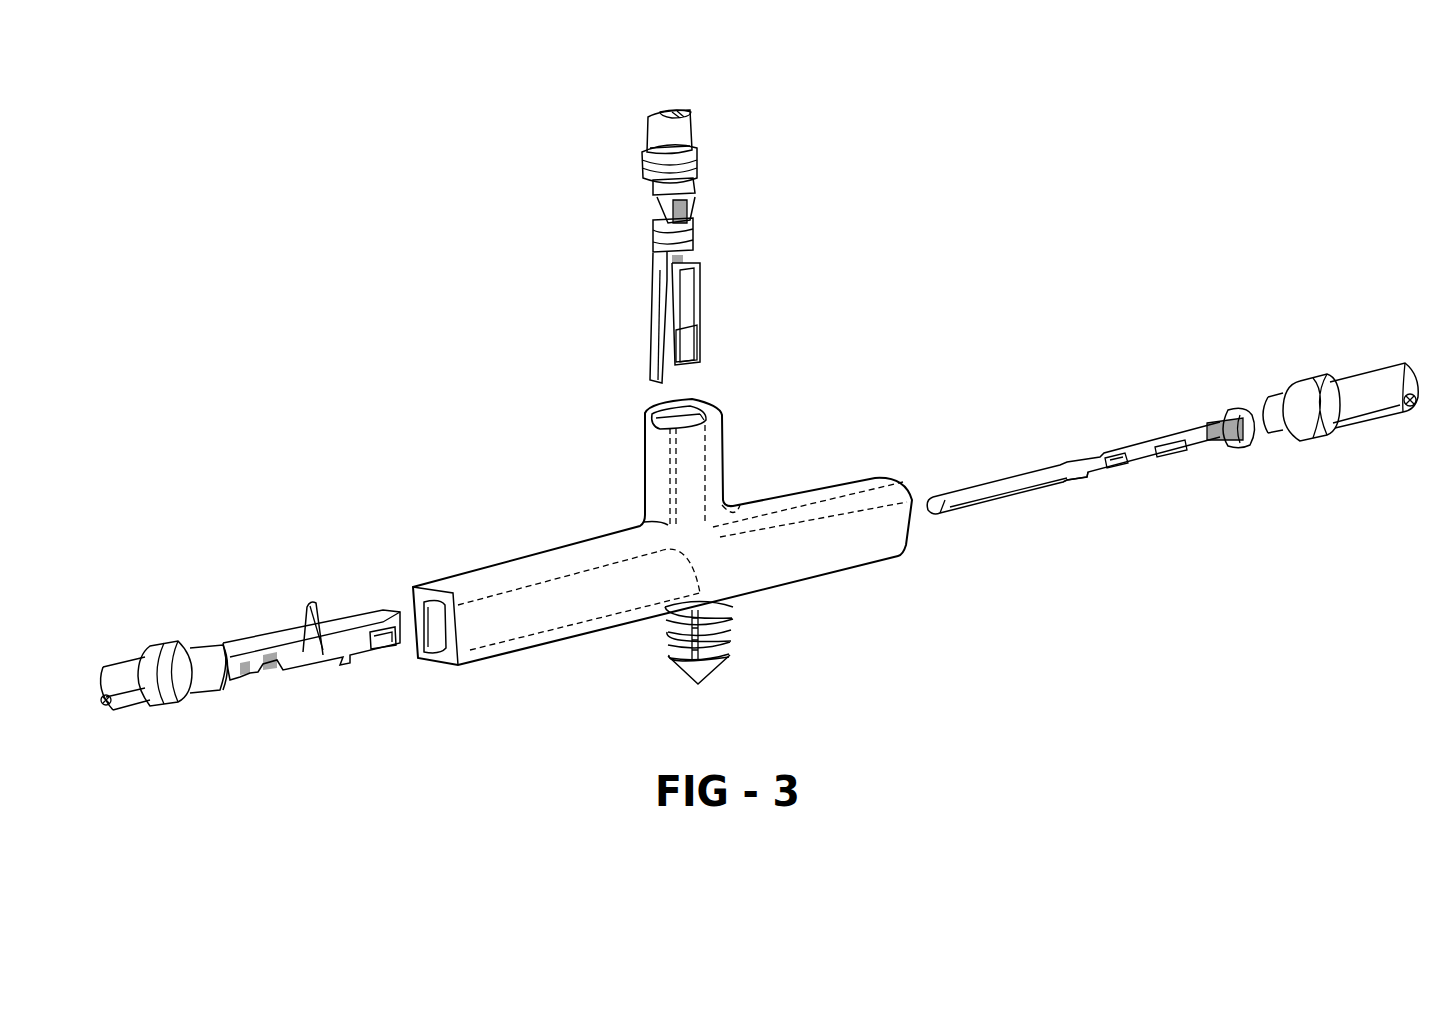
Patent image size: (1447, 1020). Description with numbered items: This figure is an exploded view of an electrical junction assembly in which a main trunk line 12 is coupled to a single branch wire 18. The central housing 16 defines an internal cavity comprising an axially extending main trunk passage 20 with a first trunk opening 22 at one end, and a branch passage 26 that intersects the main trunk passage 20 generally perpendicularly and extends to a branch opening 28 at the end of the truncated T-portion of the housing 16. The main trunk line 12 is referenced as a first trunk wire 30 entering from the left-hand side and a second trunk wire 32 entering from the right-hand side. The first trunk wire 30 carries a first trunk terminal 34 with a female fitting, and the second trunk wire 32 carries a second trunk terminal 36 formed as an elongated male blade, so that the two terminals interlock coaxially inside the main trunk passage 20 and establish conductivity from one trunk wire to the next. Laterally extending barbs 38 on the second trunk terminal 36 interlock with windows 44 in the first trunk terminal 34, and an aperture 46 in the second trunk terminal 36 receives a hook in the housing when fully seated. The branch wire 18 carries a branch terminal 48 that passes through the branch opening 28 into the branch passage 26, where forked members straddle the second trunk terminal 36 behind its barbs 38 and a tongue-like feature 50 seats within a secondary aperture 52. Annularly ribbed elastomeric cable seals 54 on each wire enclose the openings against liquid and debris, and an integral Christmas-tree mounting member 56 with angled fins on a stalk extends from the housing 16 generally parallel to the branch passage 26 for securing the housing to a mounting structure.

The main trunk line 12 is at (1182, 420).
The housing 16 is at (808, 494).
The branch wire 18 is at (655, 128).
The main trunk passage 20 is at (425, 618).
The first trunk opening 22 is at (295, 658).
The branch passage 26 is at (660, 418).
The branch opening 28 is at (688, 404).
The first trunk wire 30 is at (122, 672).
The second trunk wire 32 is at (1372, 385).
The first trunk terminal 34 is at (305, 630).
The second trunk terminal 36 is at (975, 478).
The barbs 38 is at (1083, 485).
The windows 44 is at (370, 640).
The aperture 46 is at (1165, 443).
The branch terminal 48 is at (702, 278).
The tongue-like feature 50 is at (658, 358).
The secondary aperture 52 is at (1120, 455).
The cable seals 54 is at (698, 160).
The mounting member 56 is at (748, 623).